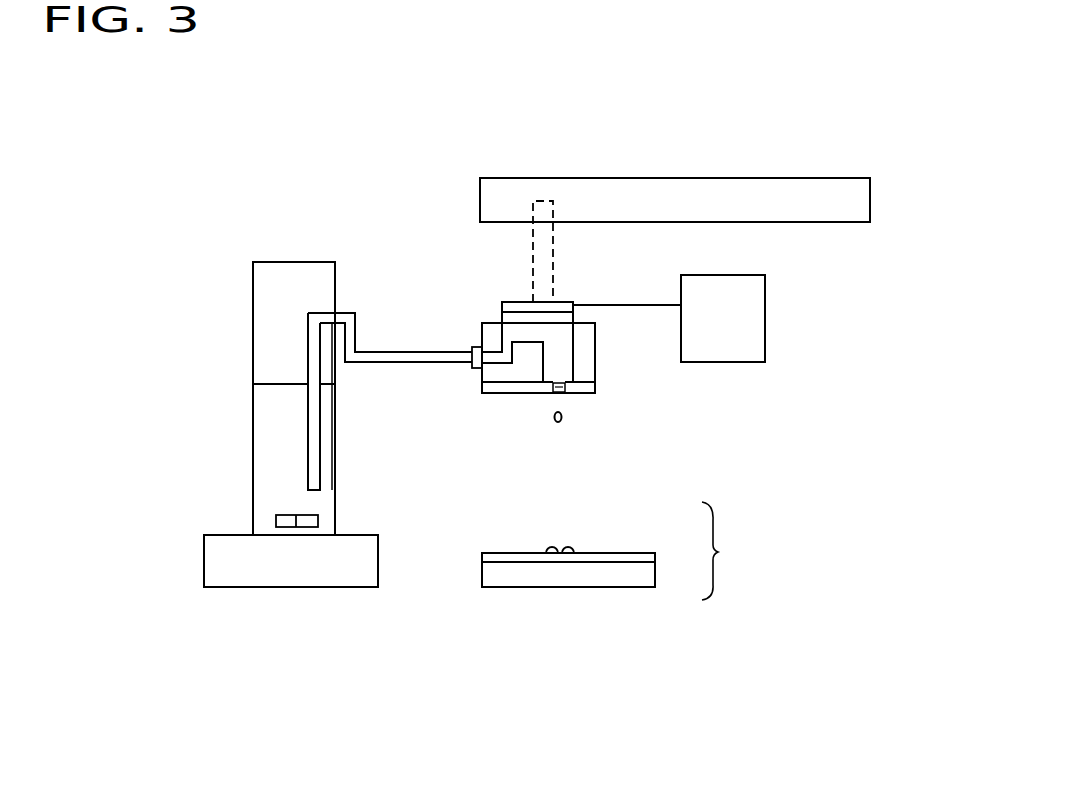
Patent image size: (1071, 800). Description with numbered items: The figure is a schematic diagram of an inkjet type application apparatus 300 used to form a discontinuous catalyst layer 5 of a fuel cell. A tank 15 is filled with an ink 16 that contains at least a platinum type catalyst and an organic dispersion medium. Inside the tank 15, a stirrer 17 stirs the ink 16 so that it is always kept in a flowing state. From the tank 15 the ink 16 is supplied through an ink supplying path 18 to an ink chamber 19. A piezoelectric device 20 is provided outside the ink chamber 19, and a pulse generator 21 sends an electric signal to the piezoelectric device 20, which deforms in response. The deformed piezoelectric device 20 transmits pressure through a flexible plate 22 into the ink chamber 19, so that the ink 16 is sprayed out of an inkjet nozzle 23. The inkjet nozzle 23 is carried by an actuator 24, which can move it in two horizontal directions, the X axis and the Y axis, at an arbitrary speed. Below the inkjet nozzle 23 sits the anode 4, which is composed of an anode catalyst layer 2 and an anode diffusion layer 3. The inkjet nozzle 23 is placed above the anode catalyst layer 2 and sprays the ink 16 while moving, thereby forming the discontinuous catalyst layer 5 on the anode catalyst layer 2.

The inkjet type application apparatus 300 is at (615, 116).
The anode catalyst layer 2 is at (617, 557).
The anode diffusion layer 3 is at (640, 576).
The anode 4 is at (723, 551).
The discontinuous catalyst layer 5 is at (570, 547).
The tank 15 is at (337, 432).
The ink 16 is at (285, 423).
The stirrer 17 is at (307, 520).
The ink supplying path 18 is at (347, 318).
The ink chamber 19 is at (560, 353).
The piezoelectric device 20 is at (560, 305).
The pulse generator 21 is at (747, 325).
The flexible plate 22 is at (513, 315).
The inkjet nozzle 23 is at (565, 385).
The actuator 24 is at (722, 190).